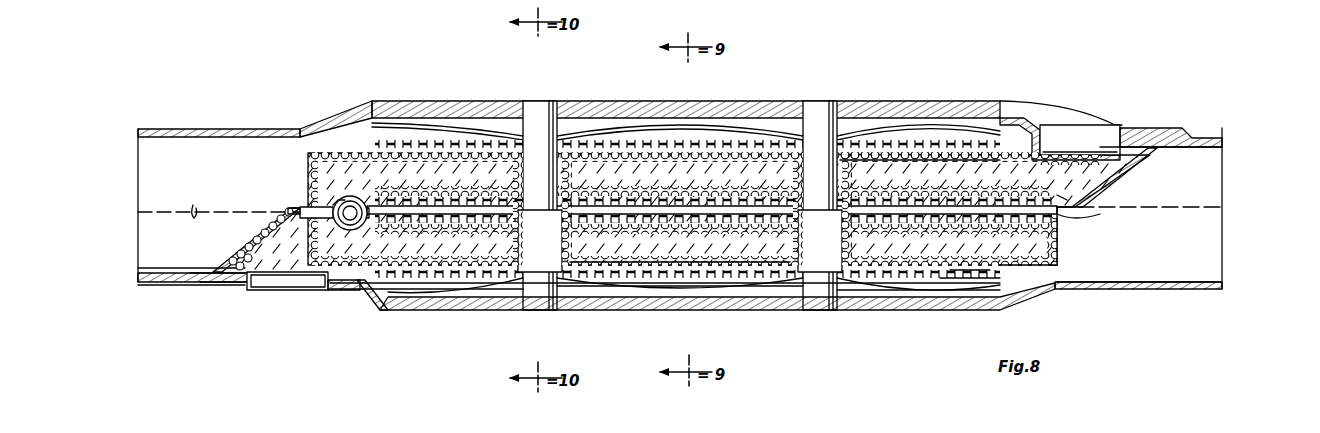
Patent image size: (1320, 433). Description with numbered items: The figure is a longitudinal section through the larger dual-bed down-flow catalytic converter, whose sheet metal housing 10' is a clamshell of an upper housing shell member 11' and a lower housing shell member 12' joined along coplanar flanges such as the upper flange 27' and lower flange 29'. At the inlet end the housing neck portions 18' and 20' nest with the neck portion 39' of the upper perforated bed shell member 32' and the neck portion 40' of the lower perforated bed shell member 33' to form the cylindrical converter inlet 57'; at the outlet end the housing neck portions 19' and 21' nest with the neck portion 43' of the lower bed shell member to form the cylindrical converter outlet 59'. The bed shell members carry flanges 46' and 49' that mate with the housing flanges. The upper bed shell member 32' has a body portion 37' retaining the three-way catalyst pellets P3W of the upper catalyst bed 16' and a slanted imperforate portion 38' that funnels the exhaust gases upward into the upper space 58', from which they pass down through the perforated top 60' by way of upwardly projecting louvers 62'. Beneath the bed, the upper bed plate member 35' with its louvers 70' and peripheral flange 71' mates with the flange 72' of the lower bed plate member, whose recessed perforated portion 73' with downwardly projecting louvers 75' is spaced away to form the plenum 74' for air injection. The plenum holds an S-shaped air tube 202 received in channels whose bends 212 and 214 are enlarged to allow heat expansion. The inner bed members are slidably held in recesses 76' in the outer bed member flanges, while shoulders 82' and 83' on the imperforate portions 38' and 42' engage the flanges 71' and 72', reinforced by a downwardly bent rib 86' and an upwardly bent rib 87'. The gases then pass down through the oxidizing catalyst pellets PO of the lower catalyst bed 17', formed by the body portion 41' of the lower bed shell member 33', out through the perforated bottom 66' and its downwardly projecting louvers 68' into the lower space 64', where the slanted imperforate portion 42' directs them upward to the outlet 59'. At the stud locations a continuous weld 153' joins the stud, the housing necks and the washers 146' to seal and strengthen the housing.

The housing 10' is at (219, 138).
The neck portion 18' is at (219, 117).
The neck portion 20' is at (177, 223).
The flange 27' is at (206, 184).
The neck portion 39' is at (175, 248).
The neck portion 40' is at (191, 317).
The flange 46' is at (217, 252).
The converter inlet 57' is at (217, 304).
The imperforate portion 38' is at (260, 218).
The shoulder 82' is at (261, 208).
The downwardly bent rib 86' is at (283, 280).
The body portion 37' is at (328, 126).
The upper shell member 11' is at (747, 104).
The upper space 58' is at (587, 104).
The upper perforated shell member 32' is at (852, 104).
The pellets P3W is at (958, 152).
The catalyst bed 16' is at (729, 171).
The recessed perforated portion 73' is at (712, 247).
The plenum 74' is at (712, 180).
The louvers 70' is at (920, 173).
The recess 76' is at (680, 240).
The perforated top 60' is at (687, 111).
The louvers 62' is at (687, 176).
The upper bed plate member 35' is at (712, 195).
The bend 212 is at (366, 203).
The air tube 202 is at (346, 230).
The bend 214 is at (358, 228).
The flange 71' is at (700, 183).
The weld 153' is at (670, 203).
The lower shell member 12' is at (691, 307).
The lower perforated shell member 33' is at (665, 311).
The lower space 64' is at (694, 310).
The washers 146' is at (426, 312).
The louvers 75' is at (680, 305).
The perforated bottom 66' is at (918, 317).
The pellets PO is at (968, 272).
The louvers 68' is at (972, 301).
The imperforate portion 42' is at (1105, 126).
The upwardly bent rib 87' is at (1084, 140).
The flange 72' is at (713, 239).
The neck portion 19' is at (1171, 108).
The neck portion 43' is at (1258, 195).
The flange 49' is at (1139, 180).
The flange 29' is at (1191, 214).
The converter outlet 59' is at (1177, 275).
The neck portion 21' is at (1138, 304).
The catalyst bed 17' is at (1088, 241).
The body portion 41' is at (1080, 251).
The shoulder 83' is at (1096, 225).